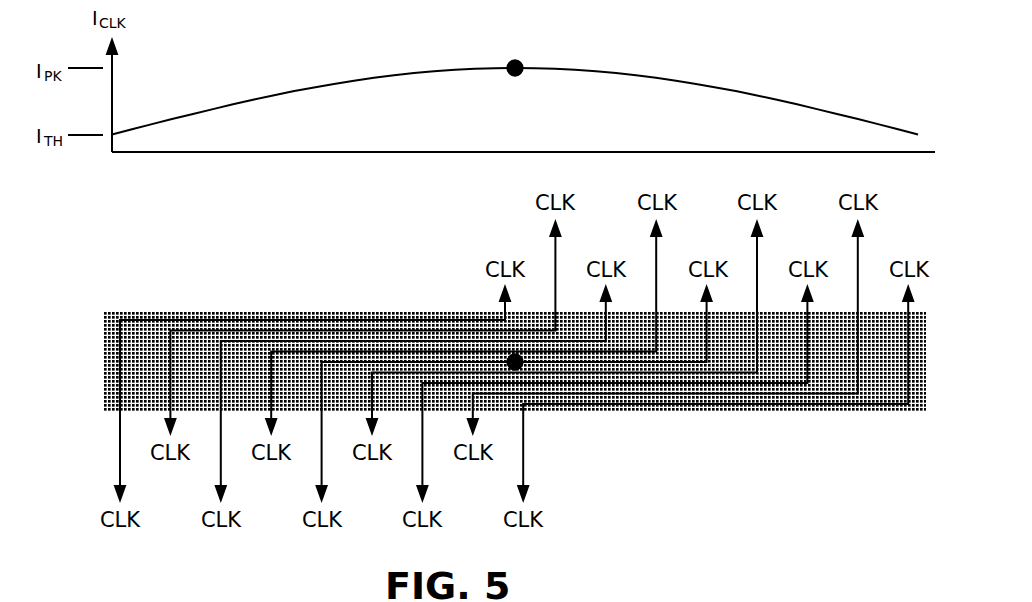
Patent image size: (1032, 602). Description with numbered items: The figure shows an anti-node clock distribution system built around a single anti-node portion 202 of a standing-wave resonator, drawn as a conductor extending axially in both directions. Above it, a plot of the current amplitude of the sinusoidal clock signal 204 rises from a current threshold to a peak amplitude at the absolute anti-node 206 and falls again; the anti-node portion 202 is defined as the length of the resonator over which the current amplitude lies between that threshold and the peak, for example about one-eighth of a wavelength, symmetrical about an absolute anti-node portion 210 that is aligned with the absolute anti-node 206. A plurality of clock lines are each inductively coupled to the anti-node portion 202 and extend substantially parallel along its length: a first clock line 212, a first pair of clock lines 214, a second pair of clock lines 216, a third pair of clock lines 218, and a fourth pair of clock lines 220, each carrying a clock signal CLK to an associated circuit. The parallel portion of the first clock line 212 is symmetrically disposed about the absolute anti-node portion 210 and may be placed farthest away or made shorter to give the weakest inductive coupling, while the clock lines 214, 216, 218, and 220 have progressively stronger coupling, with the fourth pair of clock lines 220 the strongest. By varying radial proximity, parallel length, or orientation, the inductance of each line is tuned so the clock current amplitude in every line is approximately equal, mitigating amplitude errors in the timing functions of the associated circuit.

The anti-node portion 202 is at (103, 340).
The sinusoidal clock signal 204 is at (282, 95).
The absolute anti-node 206 is at (508, 62).
The absolute anti-node portion 210 is at (512, 356).
The first clock line 212 is at (321, 464).
The first pair of clock lines 214 is at (757, 262).
The second pair of clock lines 216 is at (220, 464).
The third pair of clock lines 218 is at (555, 262).
The fourth pair of clock lines 220 is at (120, 464).